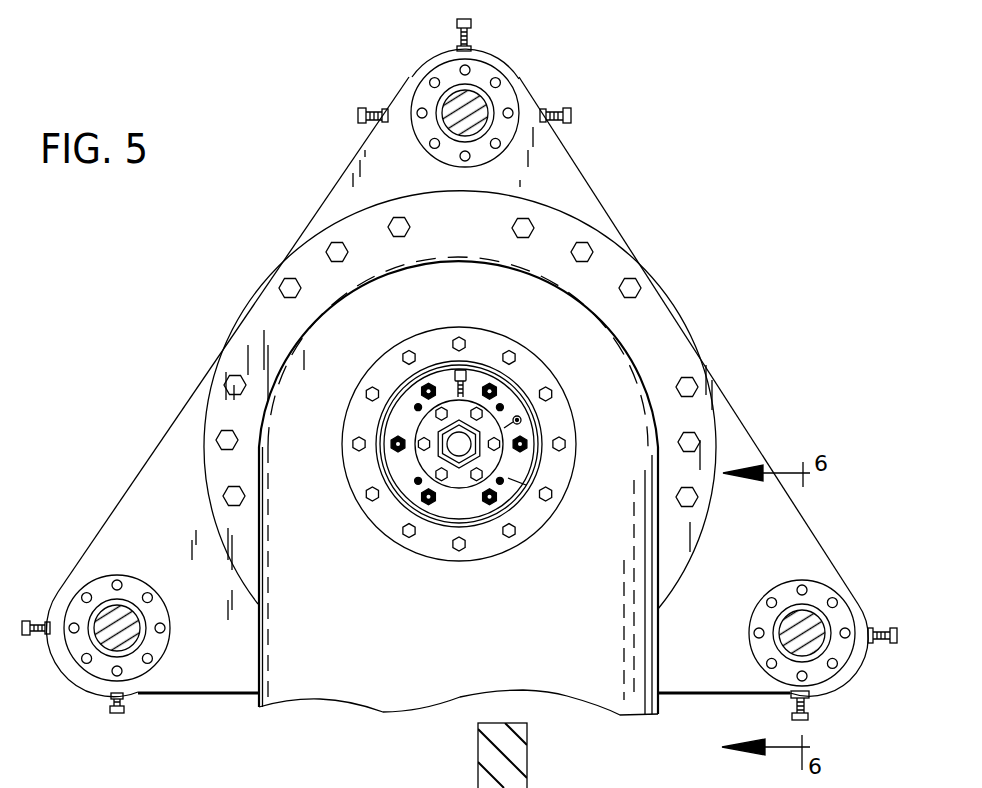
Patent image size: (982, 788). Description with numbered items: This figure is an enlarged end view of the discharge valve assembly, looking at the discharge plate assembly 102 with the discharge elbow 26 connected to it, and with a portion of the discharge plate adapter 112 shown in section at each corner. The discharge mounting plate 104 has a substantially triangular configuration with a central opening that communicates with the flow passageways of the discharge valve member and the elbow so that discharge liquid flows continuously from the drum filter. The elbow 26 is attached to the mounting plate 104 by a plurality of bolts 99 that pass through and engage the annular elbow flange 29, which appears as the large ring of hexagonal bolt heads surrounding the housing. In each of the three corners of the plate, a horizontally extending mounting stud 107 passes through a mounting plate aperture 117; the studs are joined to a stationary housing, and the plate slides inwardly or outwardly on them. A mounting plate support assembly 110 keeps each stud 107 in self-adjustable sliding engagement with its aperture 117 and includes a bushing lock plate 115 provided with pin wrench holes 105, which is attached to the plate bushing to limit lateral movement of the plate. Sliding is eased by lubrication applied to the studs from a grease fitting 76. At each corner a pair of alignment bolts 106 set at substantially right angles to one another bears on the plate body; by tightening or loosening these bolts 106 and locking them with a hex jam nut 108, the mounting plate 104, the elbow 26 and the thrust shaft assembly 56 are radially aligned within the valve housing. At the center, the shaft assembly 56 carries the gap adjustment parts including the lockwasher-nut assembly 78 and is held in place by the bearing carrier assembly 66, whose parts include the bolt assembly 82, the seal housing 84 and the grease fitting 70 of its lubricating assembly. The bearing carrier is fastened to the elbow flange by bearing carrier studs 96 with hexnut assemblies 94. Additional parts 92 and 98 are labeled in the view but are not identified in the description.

The discharge elbow 26 is at (636, 362).
The annular elbow flange 29 is at (243, 349).
The thrust shaft assembly 56 is at (448, 436).
The bearing carrier assembly 66 is at (503, 452).
The grease fitting 70 is at (450, 380).
The grease fitting 76 is at (458, 370).
The lockwasher-nut assembly 78 is at (440, 452).
The bolt assembly 82 is at (430, 500).
The seal housing 84 is at (526, 485).
The rivets 92 is at (505, 404).
The hexnut assembly 94 is at (494, 500).
The bearing carrier stud 96 is at (492, 505).
The bolt holes 98 is at (512, 355).
The bolts 99 is at (630, 288).
The discharge plate assembly 102 is at (301, 190).
The discharge mounting plate 104 is at (783, 520).
The pin wrench holes 105 is at (499, 83).
The alignment bolts 106 is at (458, 19).
The mounting studs 107 is at (450, 107).
The hex jam nut 108 is at (382, 110).
The mounting plate support assembly 110 is at (434, 66).
The discharge plate adapter 112 is at (411, 165).
The bushing lock plate 115 is at (757, 610).
The mounting plate apertures 117 is at (490, 107).